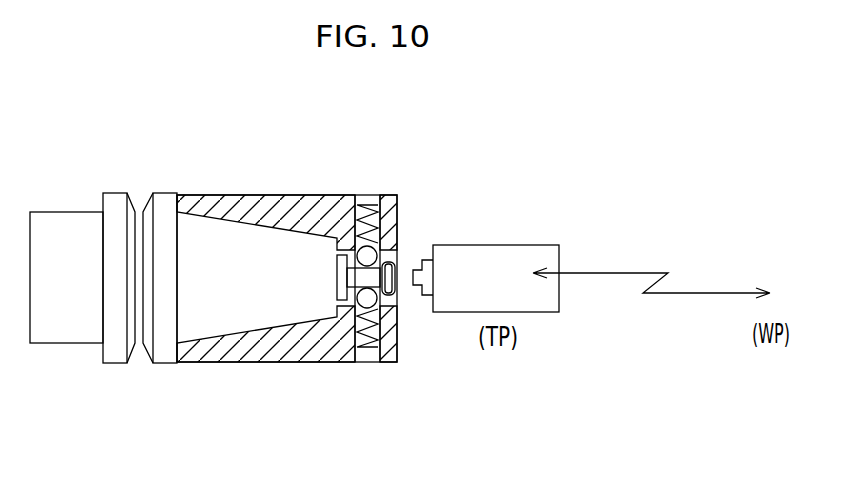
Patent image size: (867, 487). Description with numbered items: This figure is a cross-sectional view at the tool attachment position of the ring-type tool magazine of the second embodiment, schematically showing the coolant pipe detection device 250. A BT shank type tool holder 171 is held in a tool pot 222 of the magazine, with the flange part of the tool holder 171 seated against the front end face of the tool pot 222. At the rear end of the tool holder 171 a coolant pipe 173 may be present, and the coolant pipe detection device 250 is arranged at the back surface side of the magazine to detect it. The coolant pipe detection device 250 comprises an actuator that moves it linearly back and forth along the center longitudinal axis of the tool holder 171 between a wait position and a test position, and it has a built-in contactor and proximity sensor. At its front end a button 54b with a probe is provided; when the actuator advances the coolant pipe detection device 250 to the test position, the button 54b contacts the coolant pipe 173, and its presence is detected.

The tool holder 171 is at (78, 331).
The tool pot 222 is at (277, 195).
The coolant pipe 173 is at (395, 288).
The button 54b is at (430, 260).
The coolant pipe detection device 250 is at (500, 260).